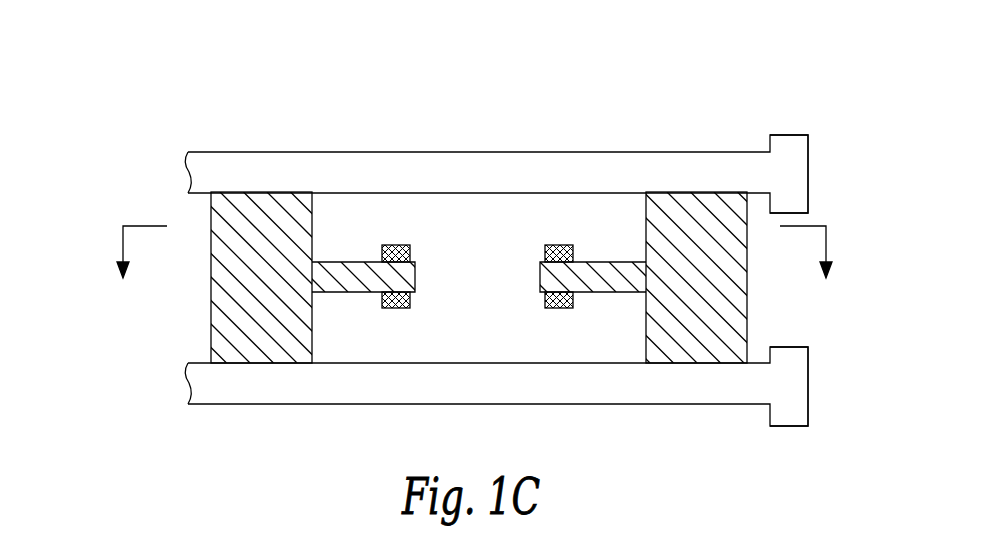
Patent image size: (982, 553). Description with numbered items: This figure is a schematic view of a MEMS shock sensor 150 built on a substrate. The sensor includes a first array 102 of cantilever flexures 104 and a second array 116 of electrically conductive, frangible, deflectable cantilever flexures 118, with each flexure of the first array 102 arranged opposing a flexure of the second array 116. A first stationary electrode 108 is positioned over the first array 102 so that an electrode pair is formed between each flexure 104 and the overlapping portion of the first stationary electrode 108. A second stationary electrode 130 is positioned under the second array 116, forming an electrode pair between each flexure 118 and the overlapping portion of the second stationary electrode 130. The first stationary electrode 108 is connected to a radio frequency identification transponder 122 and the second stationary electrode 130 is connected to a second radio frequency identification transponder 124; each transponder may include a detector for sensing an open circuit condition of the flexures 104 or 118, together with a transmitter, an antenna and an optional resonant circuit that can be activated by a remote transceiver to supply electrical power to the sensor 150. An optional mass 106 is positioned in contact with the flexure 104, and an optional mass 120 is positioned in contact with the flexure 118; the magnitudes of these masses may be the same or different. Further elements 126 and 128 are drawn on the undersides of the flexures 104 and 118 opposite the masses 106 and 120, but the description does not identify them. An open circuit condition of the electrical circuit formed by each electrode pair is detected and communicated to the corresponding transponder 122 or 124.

The shock sensor 150 is at (148, 108).
The first stationary electrode 108 is at (283, 168).
The radio frequency identification (RFID) transponder 122 is at (792, 180).
The second stationary electrode 130 is at (320, 404).
The radio frequency identification (RFID) transponder 124 is at (792, 387).
The first array of cantilever flexures 102 is at (237, 292).
The second array of cantilever flexures 116 is at (730, 300).
The cantilever flexure 104 is at (410, 277).
The mass 106 is at (395, 245).
The lower contact pad of left beam 126 is at (393, 308).
The cantilever flexure 118 is at (538, 273).
The mass 120 is at (562, 245).
The lower contact pad of right beam 128 is at (563, 308).